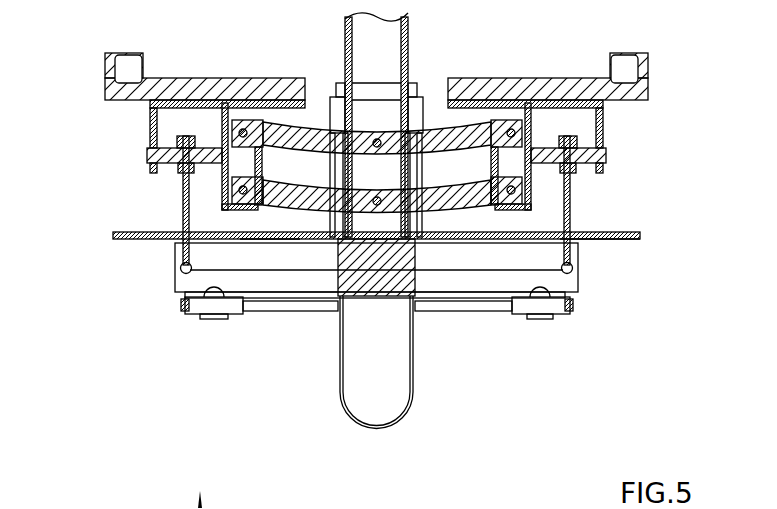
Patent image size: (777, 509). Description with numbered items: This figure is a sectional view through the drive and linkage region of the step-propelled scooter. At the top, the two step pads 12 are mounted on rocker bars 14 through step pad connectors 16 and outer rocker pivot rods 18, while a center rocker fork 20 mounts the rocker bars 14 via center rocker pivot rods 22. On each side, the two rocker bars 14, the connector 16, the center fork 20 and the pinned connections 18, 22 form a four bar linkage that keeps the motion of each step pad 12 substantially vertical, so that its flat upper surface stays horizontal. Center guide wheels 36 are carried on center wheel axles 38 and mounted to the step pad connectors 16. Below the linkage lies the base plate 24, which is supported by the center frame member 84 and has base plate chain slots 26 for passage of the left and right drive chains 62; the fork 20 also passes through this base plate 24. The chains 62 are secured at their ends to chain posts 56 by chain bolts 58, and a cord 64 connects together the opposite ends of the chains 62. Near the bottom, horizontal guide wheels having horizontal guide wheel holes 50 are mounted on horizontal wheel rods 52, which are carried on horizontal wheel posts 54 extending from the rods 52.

The step pad 12 is at (105, 68).
The rocker bar 14 is at (323, 148).
The step pad connector 16 is at (150, 104).
The outer rocker pivot rod 18 is at (262, 125).
The center rocker fork 20 is at (400, 160).
The center rocker pivot rod 22 is at (383, 133).
The base plate 24 is at (113, 235).
The base plate chain slot 26 is at (583, 240).
The center guide wheel 36 is at (150, 136).
The center wheel axle 38 is at (160, 170).
The horizontal guide wheel hole 50 is at (230, 312).
The horizontal wheel rod 52 is at (175, 288).
The horizontal wheel post 54 is at (207, 317).
The chain post 56 is at (260, 233).
The chain bolt 58 is at (180, 270).
The drive chain 62 is at (180, 193).
The cord 64 is at (185, 305).
The center frame member 84 is at (388, 292).